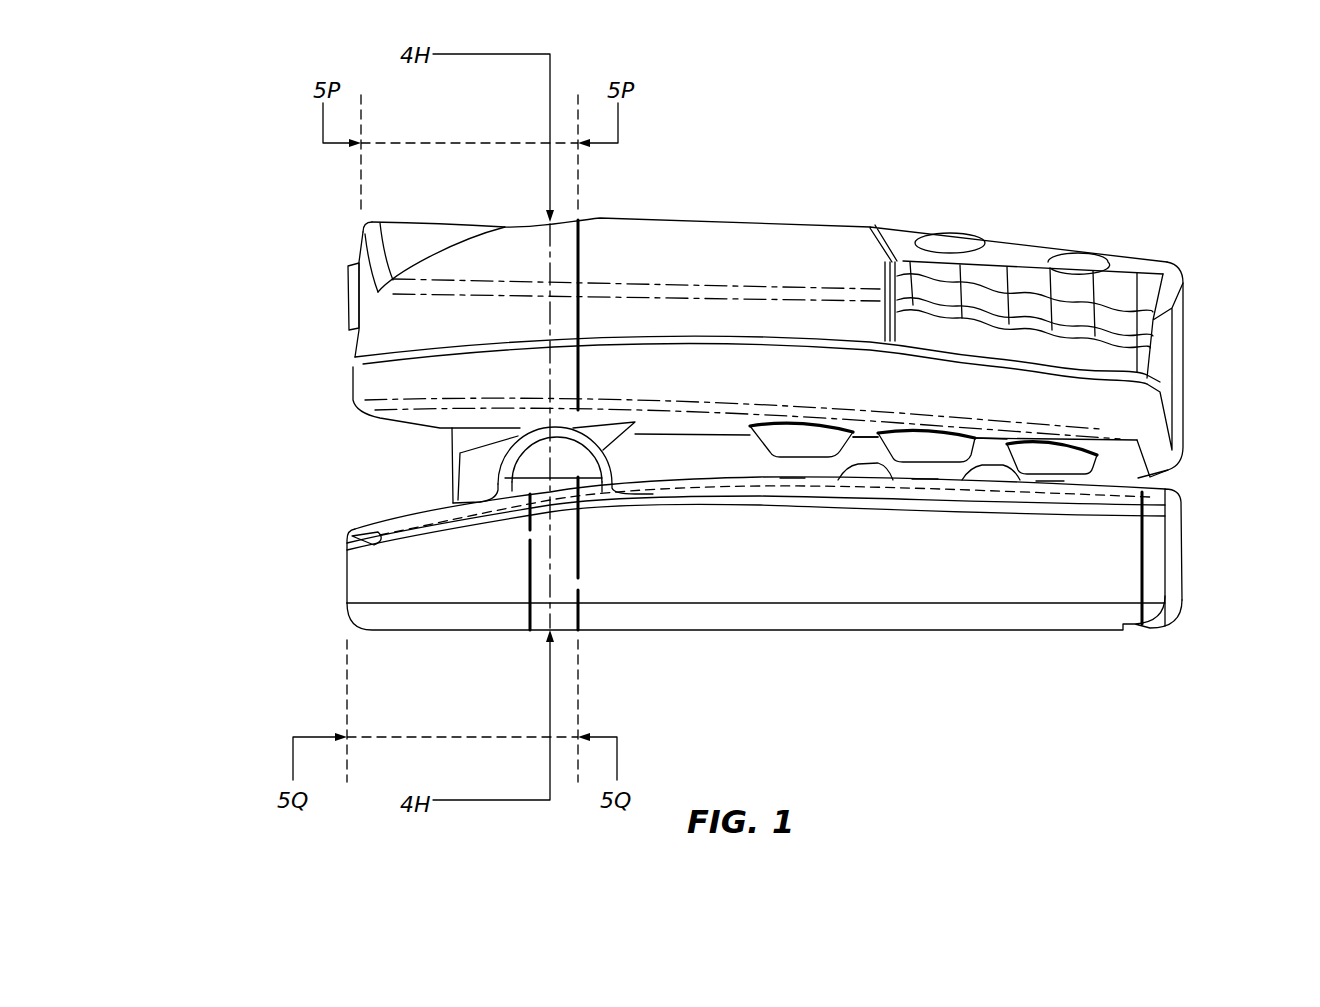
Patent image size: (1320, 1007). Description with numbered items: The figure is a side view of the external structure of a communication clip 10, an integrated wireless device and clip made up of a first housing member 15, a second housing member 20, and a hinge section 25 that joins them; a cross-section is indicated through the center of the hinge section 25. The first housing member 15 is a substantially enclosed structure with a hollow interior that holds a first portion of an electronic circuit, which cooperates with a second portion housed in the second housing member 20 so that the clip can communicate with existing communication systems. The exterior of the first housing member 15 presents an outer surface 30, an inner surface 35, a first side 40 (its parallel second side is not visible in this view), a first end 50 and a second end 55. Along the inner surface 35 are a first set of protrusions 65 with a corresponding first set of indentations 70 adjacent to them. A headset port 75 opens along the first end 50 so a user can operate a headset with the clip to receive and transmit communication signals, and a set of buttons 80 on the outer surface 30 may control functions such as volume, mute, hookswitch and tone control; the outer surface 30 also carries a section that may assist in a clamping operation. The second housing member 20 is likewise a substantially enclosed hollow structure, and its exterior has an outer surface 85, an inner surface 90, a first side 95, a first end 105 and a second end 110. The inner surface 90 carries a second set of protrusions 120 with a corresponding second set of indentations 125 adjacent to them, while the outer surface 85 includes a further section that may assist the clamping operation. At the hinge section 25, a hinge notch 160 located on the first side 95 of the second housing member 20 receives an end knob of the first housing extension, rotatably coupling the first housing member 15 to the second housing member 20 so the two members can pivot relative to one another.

The communication clip 10 is at (255, 199).
The first housing member 15 is at (1186, 251).
The second housing member 20 is at (1200, 672).
The hinge section 25 is at (380, 445).
The outer surface 30 is at (690, 208).
The inner surface 35 is at (652, 449).
The first side 40 is at (762, 243).
The first end 50 is at (352, 380).
The second end 55 is at (1185, 379).
The first set of protrusions 65 is at (799, 421).
The first set of indentations 70 is at (864, 433).
The headset port 75 is at (348, 290).
The set of buttons 80 is at (1078, 262).
The outer surface 85 is at (751, 642).
The inner surface 90 is at (712, 466).
The first side 95 is at (654, 600).
The first end 105 is at (347, 572).
The second end 110 is at (1182, 557).
The second set of protrusions 120 is at (864, 484).
The second set of indentations 125 is at (793, 482).
The hinge notch 160 is at (478, 482).